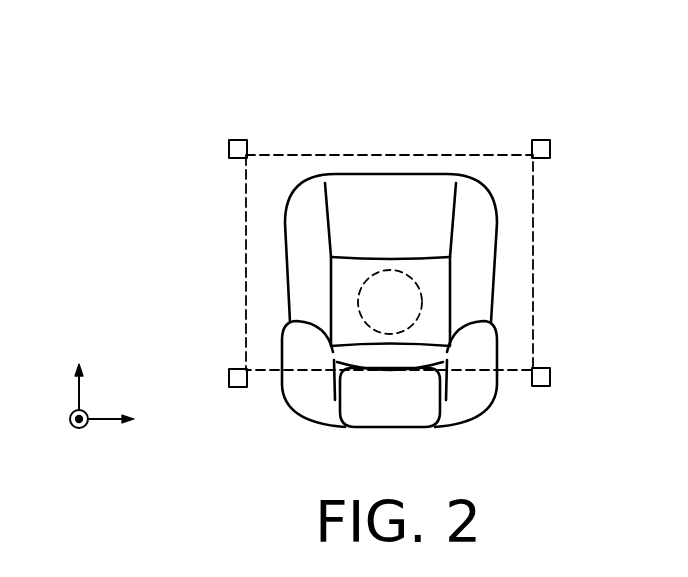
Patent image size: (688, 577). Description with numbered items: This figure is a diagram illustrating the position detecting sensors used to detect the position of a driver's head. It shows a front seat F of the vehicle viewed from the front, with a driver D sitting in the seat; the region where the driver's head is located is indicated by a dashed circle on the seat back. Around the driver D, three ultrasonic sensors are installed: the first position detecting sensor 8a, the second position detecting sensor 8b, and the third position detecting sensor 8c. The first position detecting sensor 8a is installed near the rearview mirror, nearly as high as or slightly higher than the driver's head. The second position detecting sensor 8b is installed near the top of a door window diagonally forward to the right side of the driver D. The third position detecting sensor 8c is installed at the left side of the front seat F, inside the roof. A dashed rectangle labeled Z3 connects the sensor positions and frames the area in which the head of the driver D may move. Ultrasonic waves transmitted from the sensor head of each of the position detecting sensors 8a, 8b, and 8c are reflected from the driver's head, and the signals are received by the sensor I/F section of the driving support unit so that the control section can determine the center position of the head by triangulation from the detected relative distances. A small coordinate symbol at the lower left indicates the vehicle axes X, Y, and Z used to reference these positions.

The front seat F is at (497, 388).
The driver D is at (390, 270).
The third zone Z3 is at (370, 155).
The first position detecting sensor 8a is at (237, 140).
The second position detecting sensor 8b is at (540, 140).
The third position detecting sensor 8c is at (229, 376).
The X axis X is at (79, 370).
The Y axis Y is at (123, 417).
The Z axis Z is at (72, 427).